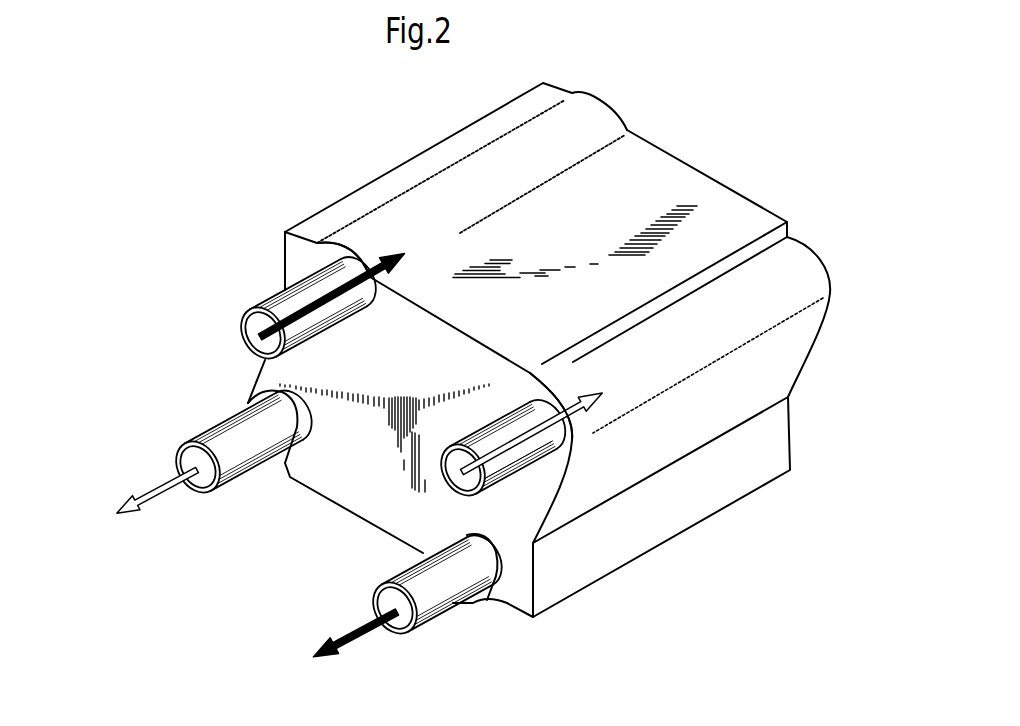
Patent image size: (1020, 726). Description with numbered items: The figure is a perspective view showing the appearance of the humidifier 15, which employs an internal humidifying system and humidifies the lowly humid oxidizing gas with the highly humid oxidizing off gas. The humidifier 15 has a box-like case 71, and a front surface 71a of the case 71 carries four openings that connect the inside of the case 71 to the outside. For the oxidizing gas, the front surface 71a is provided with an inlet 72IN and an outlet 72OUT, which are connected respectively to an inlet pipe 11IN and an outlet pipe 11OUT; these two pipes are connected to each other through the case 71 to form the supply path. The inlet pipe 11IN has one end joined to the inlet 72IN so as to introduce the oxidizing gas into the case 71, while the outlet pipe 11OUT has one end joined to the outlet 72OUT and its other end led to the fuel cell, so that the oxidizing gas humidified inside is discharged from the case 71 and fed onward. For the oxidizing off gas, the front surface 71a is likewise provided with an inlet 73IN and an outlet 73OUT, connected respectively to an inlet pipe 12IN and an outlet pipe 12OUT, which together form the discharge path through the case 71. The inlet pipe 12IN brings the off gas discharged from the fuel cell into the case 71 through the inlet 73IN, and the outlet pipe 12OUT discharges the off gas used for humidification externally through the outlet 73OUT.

The humidifier 15 is at (436, 134).
The case 71 is at (653, 163).
The front surface 71a is at (337, 495).
The inlet pipe 11IN is at (277, 293).
The outlet pipe 11OUT is at (440, 597).
The inlet pipe 12IN is at (557, 473).
The outlet pipe 12OUT is at (217, 435).
The inlet 72IN is at (370, 300).
The outlet 72OUT is at (493, 547).
The inlet 73IN is at (577, 437).
The outlet 73OUT is at (300, 426).